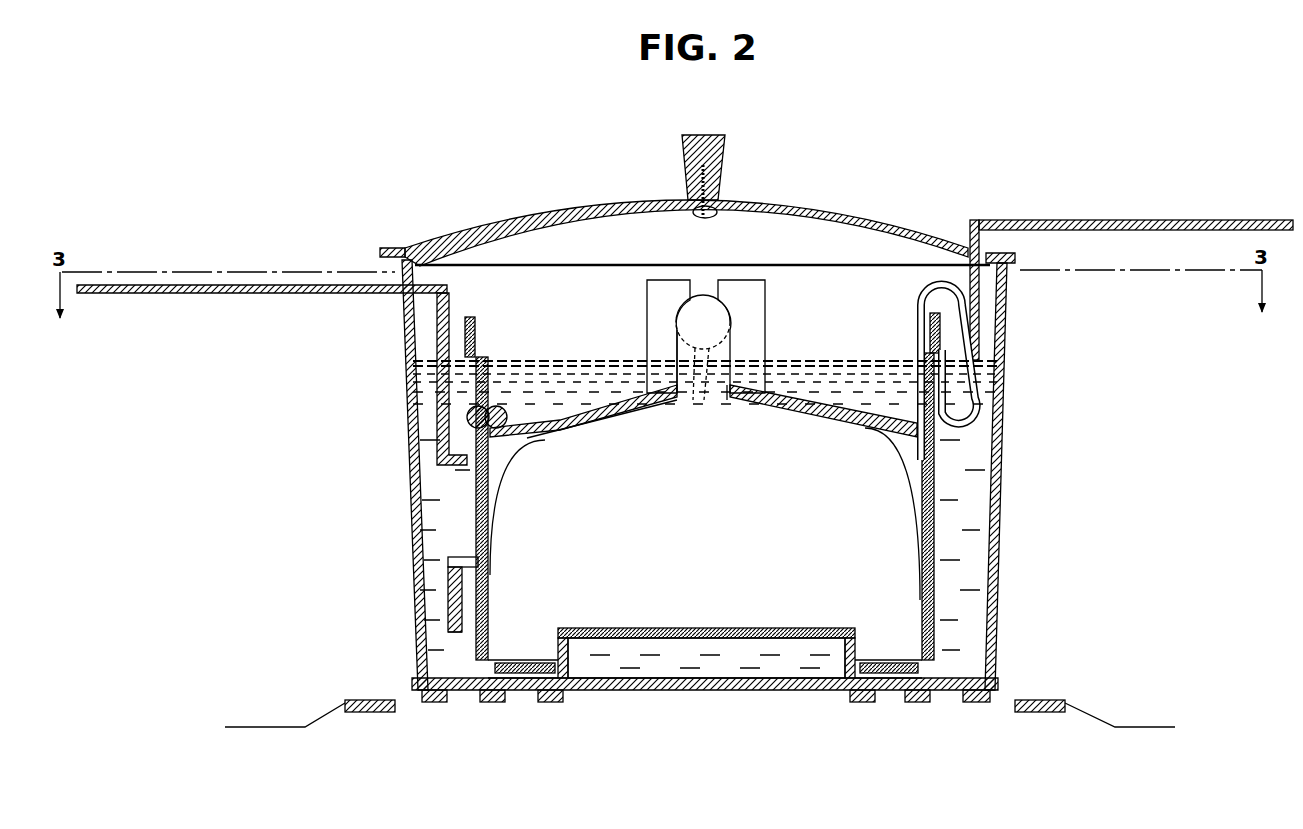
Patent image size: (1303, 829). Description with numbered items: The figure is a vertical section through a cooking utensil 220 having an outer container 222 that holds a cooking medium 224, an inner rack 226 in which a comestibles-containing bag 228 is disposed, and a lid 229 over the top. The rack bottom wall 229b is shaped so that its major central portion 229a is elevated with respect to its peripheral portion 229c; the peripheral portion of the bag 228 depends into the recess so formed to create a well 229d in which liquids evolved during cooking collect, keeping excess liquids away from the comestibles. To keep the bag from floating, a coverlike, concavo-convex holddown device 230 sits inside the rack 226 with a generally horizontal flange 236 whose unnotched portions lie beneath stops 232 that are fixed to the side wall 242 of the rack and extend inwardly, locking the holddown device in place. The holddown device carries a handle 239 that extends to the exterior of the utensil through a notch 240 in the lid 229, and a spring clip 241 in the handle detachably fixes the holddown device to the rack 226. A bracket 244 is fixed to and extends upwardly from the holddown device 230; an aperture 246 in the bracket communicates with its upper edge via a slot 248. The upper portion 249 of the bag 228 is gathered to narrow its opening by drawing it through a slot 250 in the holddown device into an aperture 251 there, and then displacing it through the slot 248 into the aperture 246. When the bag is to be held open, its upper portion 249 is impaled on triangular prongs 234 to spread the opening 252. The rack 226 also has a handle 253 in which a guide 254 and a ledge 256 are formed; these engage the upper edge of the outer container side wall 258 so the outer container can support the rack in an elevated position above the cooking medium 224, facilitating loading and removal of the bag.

The cooking utensil 220 is at (437, 187).
The outer container 222 is at (406, 500).
The cooking medium 224 is at (975, 470).
The inner rack 226 is at (937, 508).
The comestibles-containing bag 228 is at (705, 514).
The lid 229 is at (600, 212).
The central portion of rack bottom wall 229a is at (795, 628).
The rack bottom wall 229b is at (620, 630).
The peripheral portion of rack bottom wall 229c is at (895, 660).
The well 229d is at (533, 645).
The holddown device 230 is at (625, 390).
The stops 232 is at (492, 408).
The prongs 234 is at (473, 337).
The flange 236 is at (900, 423).
The handle 239 is at (1085, 222).
The notch 240 is at (972, 252).
The spring clip 241 is at (946, 294).
The side wall of rack 242 is at (448, 392).
The bracket 244 is at (646, 318).
The aperture 246 is at (722, 330).
The slot 248 is at (712, 283).
The upper portion of bag 249 is at (677, 365).
The slot 250 is at (595, 410).
The aperture 251 is at (727, 400).
The opening 252 is at (700, 383).
The handle 253 is at (198, 282).
The guide 254 is at (448, 603).
The ledge 256 is at (450, 557).
The outer container side wall 258 is at (404, 340).